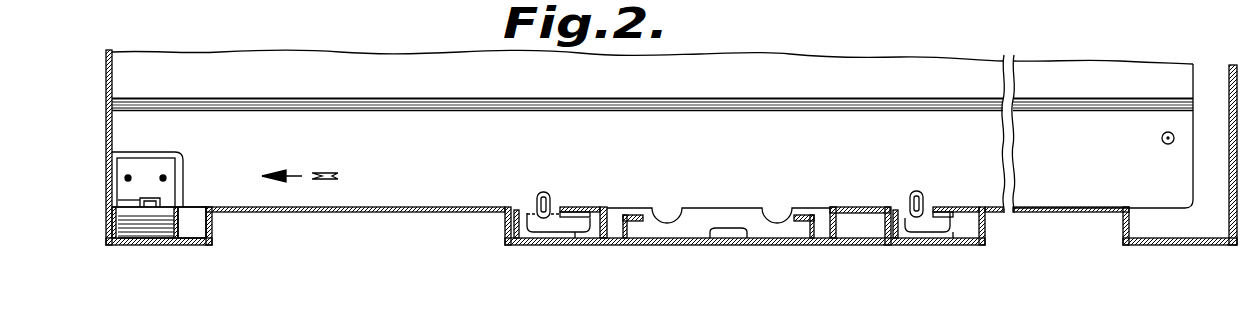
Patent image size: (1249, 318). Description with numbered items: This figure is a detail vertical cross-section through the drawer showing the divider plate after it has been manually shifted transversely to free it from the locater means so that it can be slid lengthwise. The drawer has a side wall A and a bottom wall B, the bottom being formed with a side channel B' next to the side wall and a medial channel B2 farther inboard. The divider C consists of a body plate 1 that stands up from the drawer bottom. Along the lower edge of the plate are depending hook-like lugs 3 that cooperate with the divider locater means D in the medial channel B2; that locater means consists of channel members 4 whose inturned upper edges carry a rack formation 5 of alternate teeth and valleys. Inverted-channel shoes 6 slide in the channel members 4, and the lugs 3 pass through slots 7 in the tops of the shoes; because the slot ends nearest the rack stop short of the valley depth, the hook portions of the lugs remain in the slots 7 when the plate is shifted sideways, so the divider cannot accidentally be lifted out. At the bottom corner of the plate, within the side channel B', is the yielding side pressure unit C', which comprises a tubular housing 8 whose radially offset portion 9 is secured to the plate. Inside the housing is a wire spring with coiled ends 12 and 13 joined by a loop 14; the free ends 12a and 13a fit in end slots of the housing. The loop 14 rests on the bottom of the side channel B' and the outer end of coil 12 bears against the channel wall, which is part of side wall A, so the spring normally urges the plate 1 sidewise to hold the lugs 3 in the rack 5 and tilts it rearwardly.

The side wall A is at (108, 56).
The divider C is at (652, 84).
The body plate 1 is at (903, 133).
The bottom wall B is at (721, 203).
The side channel B' is at (177, 226).
The medial channel B2 is at (988, 228).
The radially offset portion 9 is at (145, 170).
The spring unit C' is at (189, 167).
The free end 13a is at (160, 202).
The tubular housing 8 is at (178, 215).
The free end 12a is at (140, 200).
The coiled end 12 is at (118, 226).
The coiled end 13 is at (178, 227).
The loop 14 is at (158, 242).
The divider locater means D is at (600, 207).
The slots 7 is at (511, 228).
The shoes 6 is at (527, 213).
The hook-like lugs 3 is at (554, 223).
The rack formation 5 is at (580, 207).
The channel members 4 is at (583, 237).